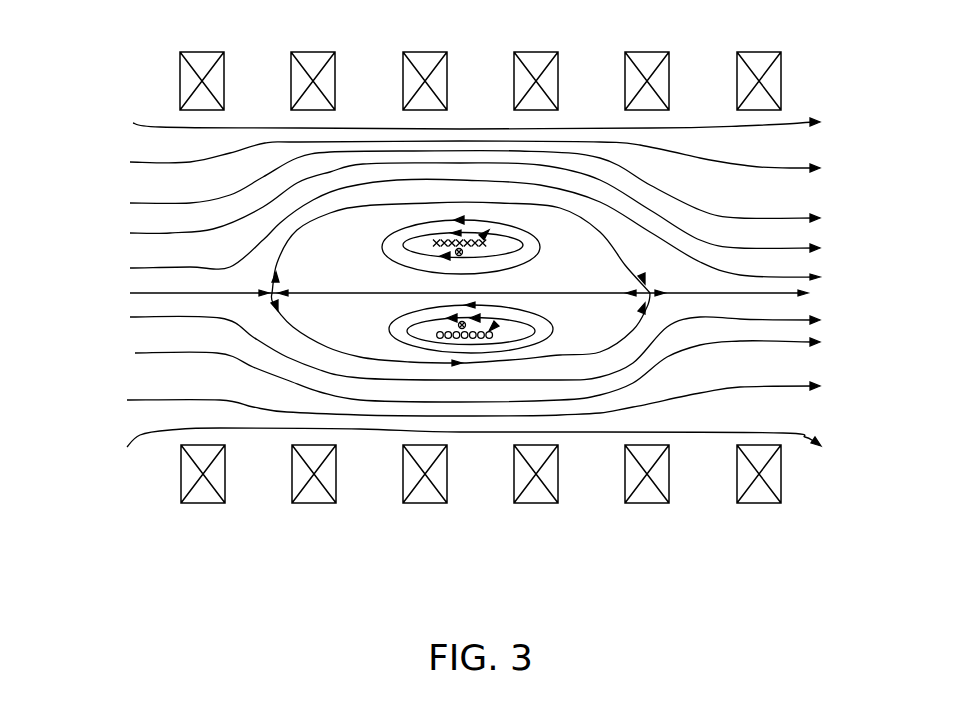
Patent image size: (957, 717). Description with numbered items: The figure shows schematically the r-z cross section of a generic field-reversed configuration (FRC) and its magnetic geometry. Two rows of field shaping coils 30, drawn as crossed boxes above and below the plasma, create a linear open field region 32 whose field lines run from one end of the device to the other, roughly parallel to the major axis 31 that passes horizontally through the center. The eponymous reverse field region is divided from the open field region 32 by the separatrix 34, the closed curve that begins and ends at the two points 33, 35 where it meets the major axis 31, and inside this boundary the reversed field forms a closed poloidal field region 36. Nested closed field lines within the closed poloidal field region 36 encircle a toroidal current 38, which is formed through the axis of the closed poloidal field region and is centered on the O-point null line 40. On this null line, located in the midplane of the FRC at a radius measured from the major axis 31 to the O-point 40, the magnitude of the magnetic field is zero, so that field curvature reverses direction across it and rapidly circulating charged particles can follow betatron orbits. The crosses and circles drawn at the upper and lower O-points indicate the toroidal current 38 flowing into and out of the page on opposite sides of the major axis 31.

The field shaping coils 30 is at (319, 510).
The major axis 31 is at (150, 290).
The open field region 32 is at (260, 136).
The upstream stagnation point 33 is at (268, 299).
The separatrix 34 is at (347, 210).
The downstream stagnation point 35 is at (632, 302).
The closed poloidal field region 36 is at (462, 370).
The toroidal current 38 is at (500, 325).
The O-point null line 40 is at (446, 316).